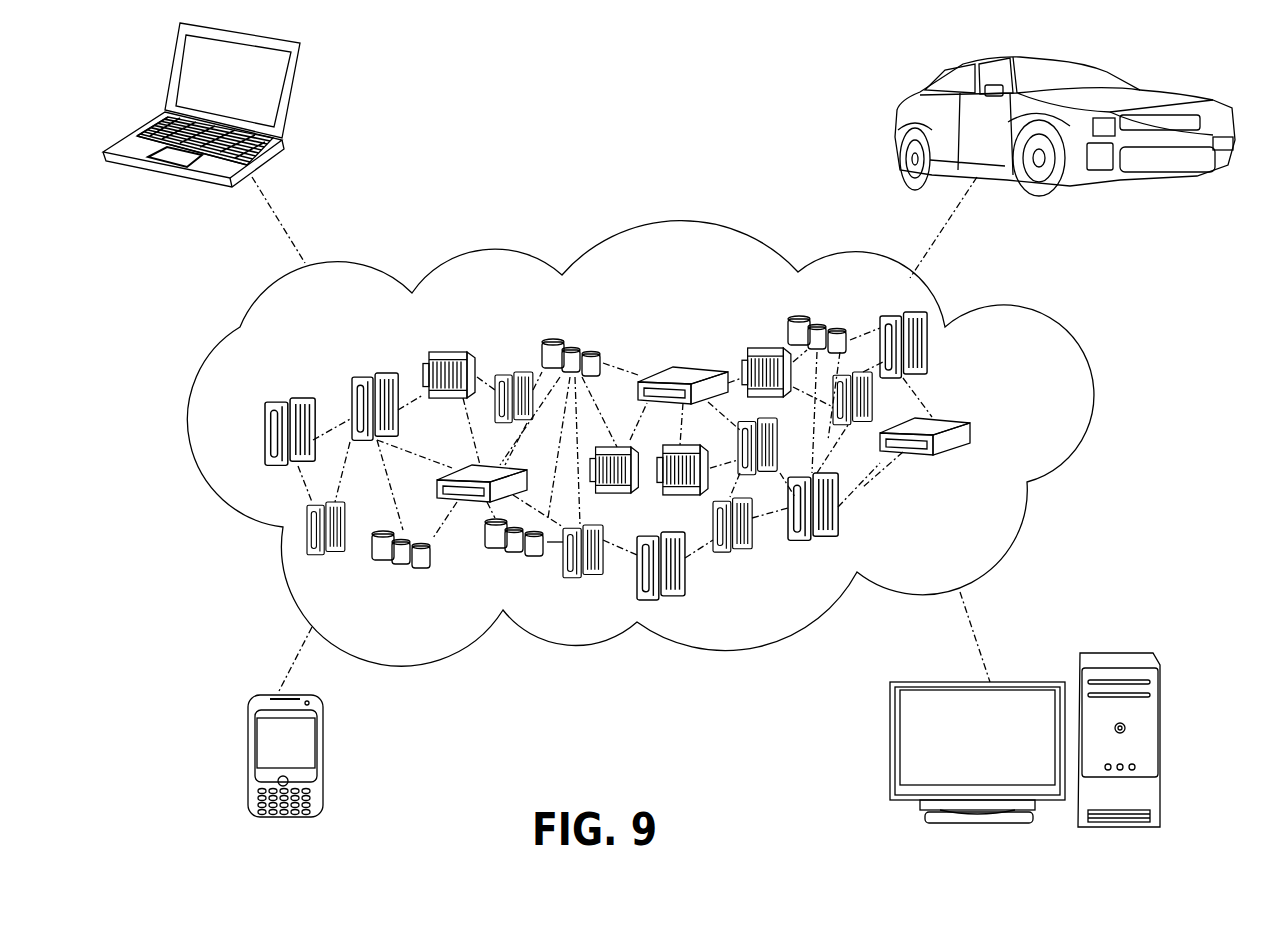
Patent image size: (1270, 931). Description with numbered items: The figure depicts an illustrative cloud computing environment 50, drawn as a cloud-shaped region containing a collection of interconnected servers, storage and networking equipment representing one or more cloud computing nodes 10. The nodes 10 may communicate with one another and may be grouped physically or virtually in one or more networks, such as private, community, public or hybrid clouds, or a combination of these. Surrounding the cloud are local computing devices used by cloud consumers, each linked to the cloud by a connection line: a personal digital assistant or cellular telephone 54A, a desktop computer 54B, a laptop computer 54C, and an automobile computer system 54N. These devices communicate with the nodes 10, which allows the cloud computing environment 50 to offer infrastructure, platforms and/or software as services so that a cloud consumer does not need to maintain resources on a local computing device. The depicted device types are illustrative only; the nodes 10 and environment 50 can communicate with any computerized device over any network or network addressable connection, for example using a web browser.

The cloud computing nodes 10 is at (669, 425).
The cloud computing environment 50 is at (1037, 343).
The personal digital assistant (PDA) or cellular telephone 54A is at (248, 760).
The desktop computer 54B is at (1125, 653).
The laptop computer 54C is at (292, 97).
The automobile computer system 54N is at (897, 104).